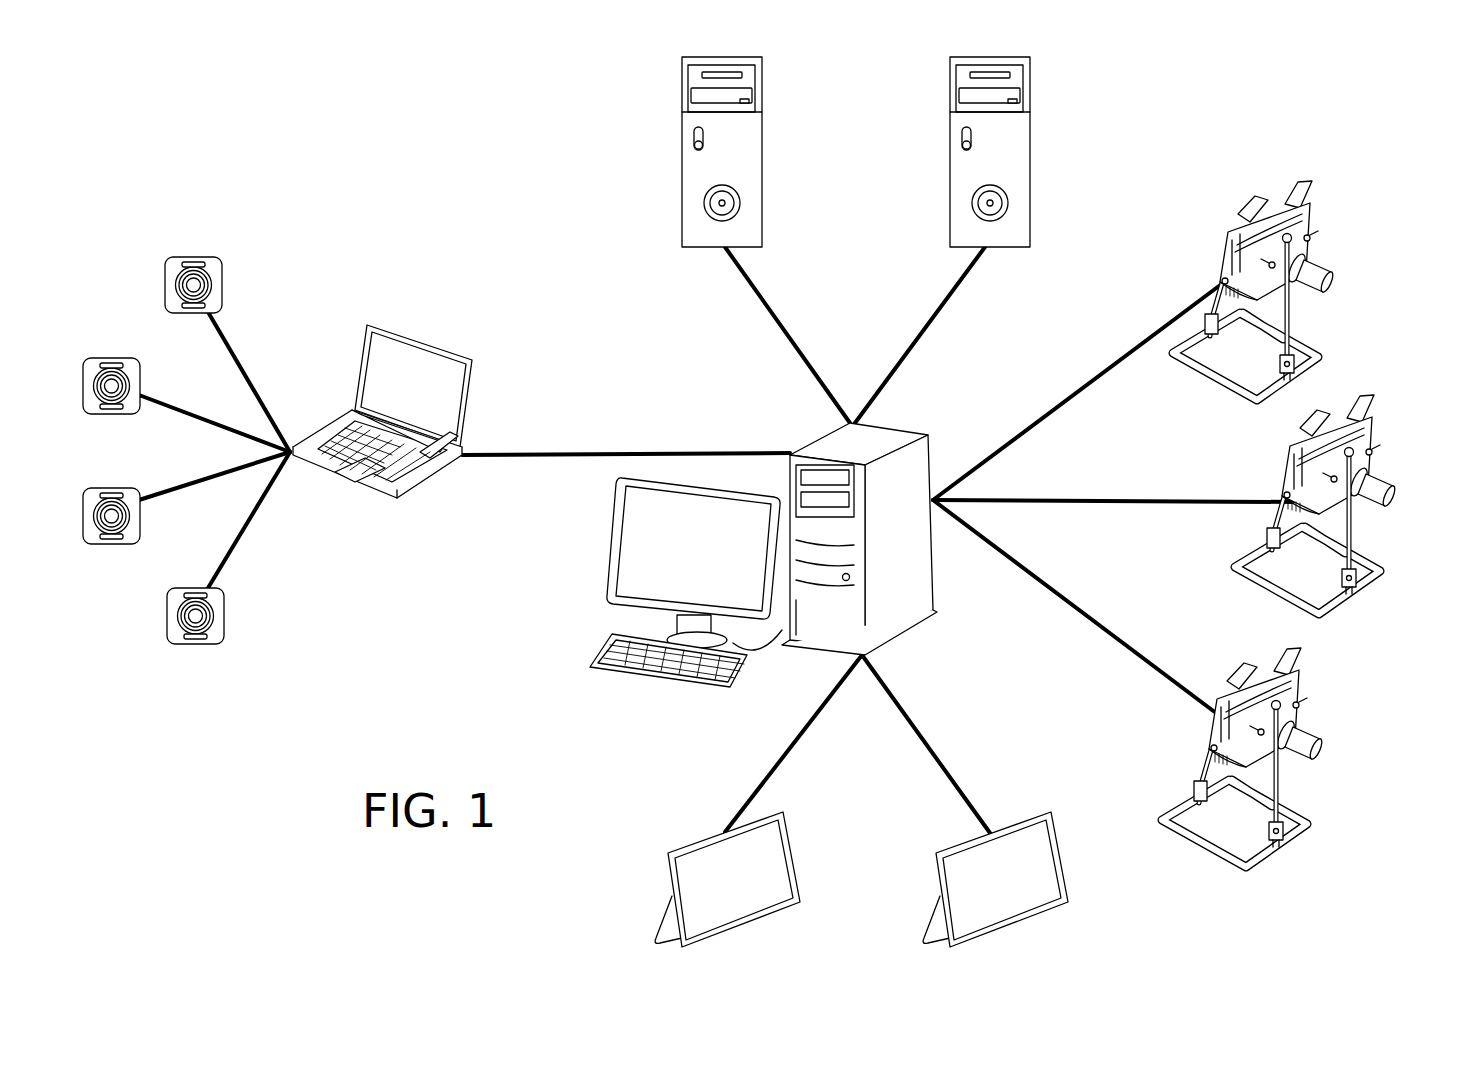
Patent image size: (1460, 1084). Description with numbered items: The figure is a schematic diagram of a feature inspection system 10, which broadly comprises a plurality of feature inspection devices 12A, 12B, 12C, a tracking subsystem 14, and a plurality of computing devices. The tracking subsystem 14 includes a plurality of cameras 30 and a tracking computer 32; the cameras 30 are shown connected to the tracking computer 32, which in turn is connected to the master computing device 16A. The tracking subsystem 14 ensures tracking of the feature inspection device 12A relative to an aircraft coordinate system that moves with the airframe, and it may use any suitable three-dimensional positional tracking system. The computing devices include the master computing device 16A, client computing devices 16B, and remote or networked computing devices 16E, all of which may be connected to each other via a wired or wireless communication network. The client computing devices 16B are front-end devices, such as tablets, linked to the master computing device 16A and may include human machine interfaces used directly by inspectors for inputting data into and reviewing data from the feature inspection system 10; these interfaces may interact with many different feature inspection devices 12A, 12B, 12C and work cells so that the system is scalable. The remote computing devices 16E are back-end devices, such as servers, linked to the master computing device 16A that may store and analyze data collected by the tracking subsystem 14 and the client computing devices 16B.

The feature inspection system 10 is at (1228, 100).
The feature inspection device 12A is at (1308, 225).
The feature inspection device 12B is at (1370, 439).
The feature inspection device 12C is at (1297, 692).
The tracking subsystem 14 is at (358, 240).
The master computing device 16A is at (915, 582).
The client computing device 16B is at (775, 833).
The remote computing device 16E is at (757, 150).
The camera 30 is at (222, 283).
The tracking computer 32 is at (465, 370).